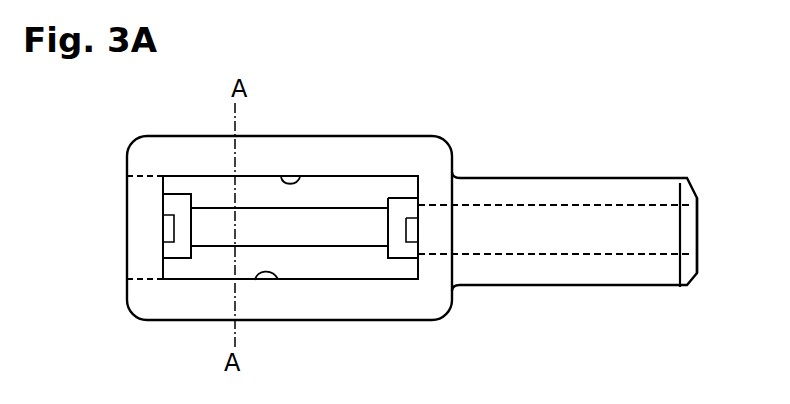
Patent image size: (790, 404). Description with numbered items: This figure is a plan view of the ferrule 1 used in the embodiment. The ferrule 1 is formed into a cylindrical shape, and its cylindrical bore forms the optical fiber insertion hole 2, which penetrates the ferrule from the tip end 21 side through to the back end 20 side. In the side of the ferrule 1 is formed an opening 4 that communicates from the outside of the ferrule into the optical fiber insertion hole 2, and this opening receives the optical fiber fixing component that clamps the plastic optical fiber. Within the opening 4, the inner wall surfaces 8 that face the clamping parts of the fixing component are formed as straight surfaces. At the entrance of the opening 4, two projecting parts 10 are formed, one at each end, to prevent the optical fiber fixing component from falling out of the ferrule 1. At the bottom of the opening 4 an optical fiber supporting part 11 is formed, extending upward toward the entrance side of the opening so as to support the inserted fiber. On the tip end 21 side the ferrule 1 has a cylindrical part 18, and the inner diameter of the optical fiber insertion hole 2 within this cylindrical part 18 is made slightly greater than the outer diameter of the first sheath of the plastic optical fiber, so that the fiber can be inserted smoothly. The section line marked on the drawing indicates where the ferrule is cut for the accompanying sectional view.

The ferrule 1 is at (470, 114).
The optical fiber insertion hole 2 is at (355, 272).
The opening 4 is at (373, 186).
The inner wall surfaces 8 is at (300, 177).
The projecting parts 10 is at (168, 220).
The optical fiber supporting part 11 is at (324, 234).
The cylindrical part 18 is at (582, 196).
The back end 20 is at (127, 232).
The tip end 21 is at (697, 226).